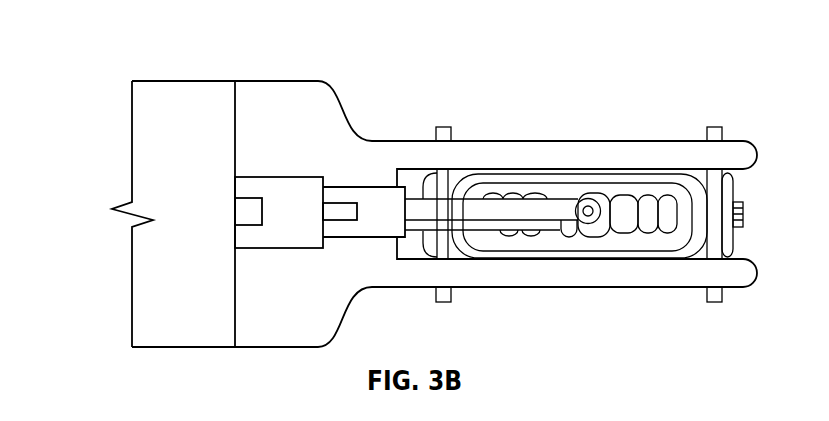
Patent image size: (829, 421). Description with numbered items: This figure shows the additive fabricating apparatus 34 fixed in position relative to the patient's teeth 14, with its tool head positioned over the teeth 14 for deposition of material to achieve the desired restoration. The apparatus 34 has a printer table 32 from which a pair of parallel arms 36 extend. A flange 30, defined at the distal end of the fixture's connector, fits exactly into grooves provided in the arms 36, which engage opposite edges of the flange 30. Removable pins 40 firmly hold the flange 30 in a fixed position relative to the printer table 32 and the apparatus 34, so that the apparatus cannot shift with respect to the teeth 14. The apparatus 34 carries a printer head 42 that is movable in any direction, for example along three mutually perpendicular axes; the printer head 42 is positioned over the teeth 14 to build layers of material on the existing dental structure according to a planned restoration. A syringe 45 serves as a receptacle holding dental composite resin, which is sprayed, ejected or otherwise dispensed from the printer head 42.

The additive fabricating apparatus 34 is at (102, 58).
The printer table 32 is at (302, 107).
The arms 36 is at (581, 158).
The removable pins 40 is at (451, 134).
The flange 30 is at (623, 175).
The teeth 14 is at (563, 232).
The syringe 45 is at (511, 207).
The printer head 42 is at (588, 214).